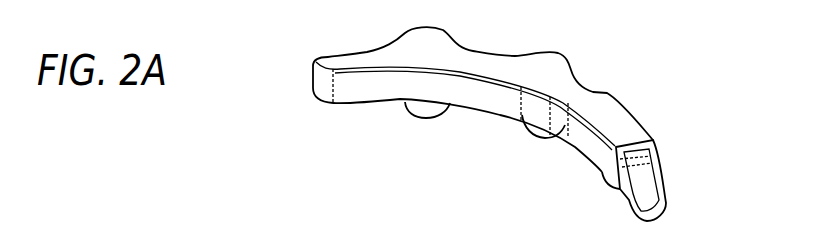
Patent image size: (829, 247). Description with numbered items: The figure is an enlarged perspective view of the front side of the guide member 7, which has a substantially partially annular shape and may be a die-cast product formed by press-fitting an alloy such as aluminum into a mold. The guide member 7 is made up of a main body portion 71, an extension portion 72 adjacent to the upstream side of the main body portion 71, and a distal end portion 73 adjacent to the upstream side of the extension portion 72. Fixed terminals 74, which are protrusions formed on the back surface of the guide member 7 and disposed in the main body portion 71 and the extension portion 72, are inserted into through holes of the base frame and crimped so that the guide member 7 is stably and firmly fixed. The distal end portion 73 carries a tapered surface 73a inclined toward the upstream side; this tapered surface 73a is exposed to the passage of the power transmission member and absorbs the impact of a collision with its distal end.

The guide member 7 is at (331, 172).
The main body portion 71 is at (466, 101).
The extension portion 72 is at (587, 143).
The distal end portion 73 is at (628, 196).
The tapered surface 73a is at (650, 180).
The fixed terminal 74 is at (422, 120).